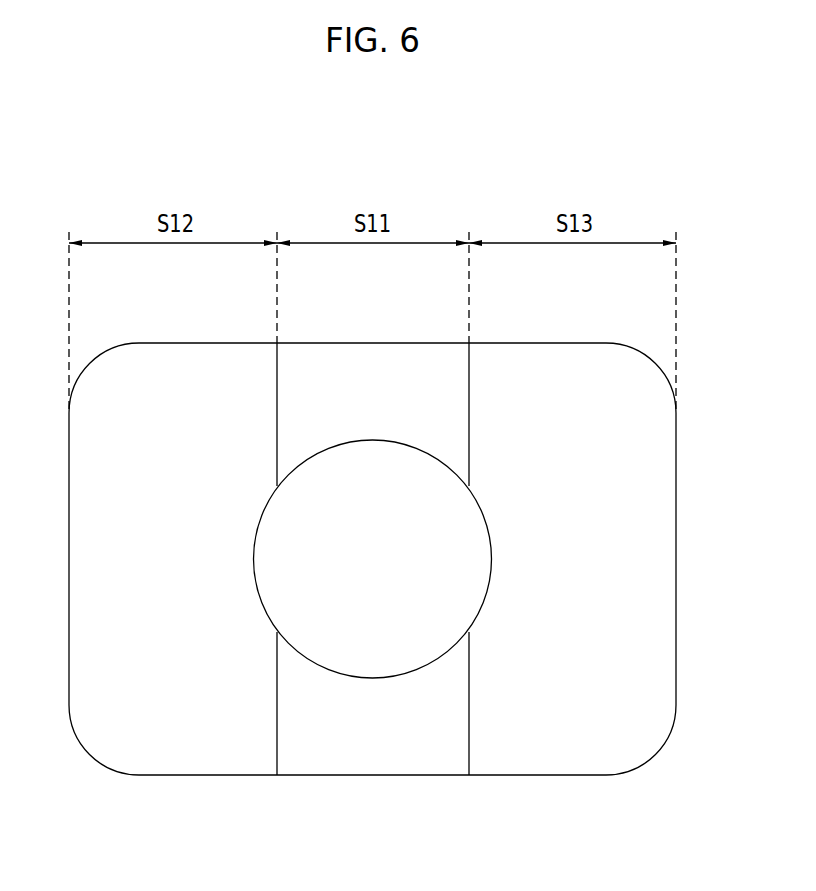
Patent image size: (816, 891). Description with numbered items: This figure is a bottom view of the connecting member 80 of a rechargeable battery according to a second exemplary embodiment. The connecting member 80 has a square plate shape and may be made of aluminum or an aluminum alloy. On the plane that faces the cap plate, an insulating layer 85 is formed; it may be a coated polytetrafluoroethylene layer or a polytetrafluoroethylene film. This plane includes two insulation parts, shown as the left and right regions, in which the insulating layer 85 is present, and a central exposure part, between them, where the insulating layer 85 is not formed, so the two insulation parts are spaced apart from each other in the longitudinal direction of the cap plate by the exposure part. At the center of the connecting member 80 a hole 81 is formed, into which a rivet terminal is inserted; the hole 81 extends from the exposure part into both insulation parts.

The connecting member 80 is at (616, 800).
The hole 81 is at (372, 679).
The insulating layer 85 is at (552, 738).